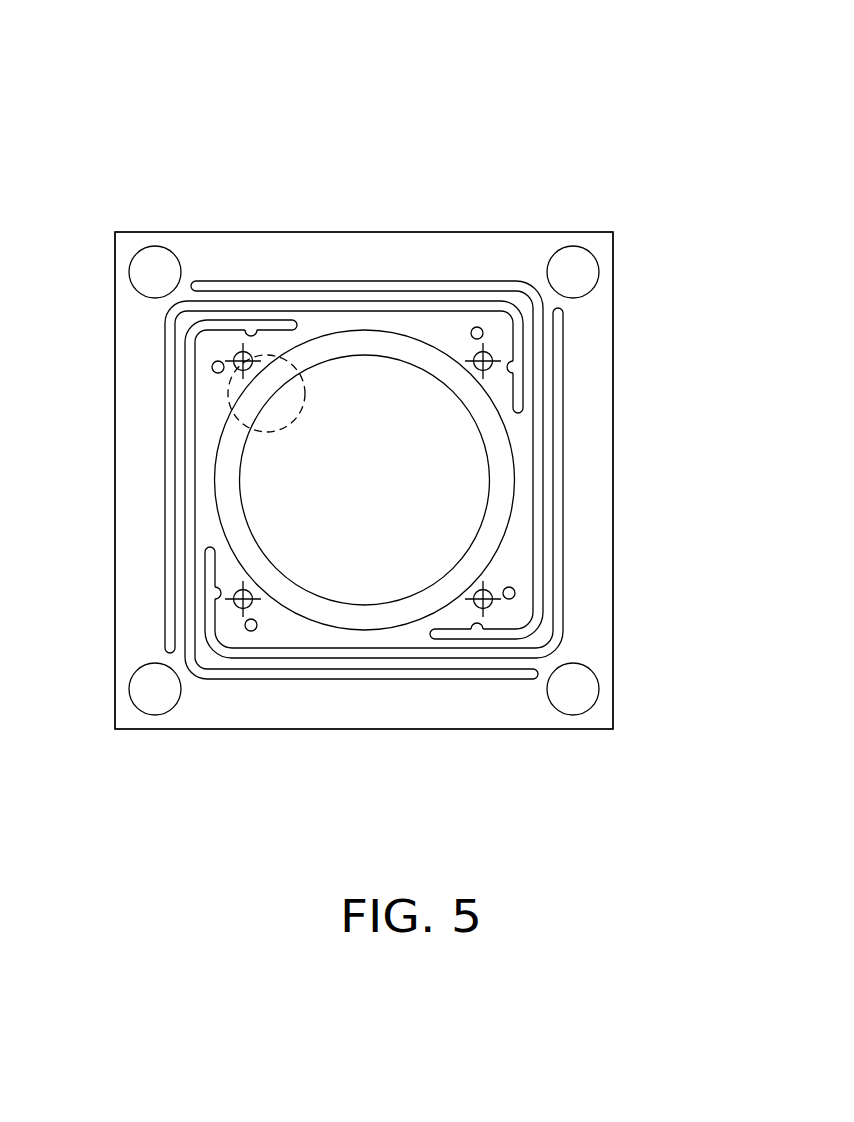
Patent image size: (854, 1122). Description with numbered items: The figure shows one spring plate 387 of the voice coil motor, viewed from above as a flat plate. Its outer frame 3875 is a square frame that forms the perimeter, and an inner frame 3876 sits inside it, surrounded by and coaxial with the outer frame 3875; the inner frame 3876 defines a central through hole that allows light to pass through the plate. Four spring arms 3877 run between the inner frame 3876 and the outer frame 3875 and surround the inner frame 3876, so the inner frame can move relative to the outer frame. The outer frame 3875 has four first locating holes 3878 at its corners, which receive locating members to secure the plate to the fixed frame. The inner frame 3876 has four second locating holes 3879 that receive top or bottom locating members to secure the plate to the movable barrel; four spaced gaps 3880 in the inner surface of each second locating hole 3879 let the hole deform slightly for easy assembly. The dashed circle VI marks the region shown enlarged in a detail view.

The spring plate 387 is at (247, 123).
The outer frame 3875 is at (582, 445).
The inner frame 3876 is at (515, 558).
The spring arms 3877 is at (548, 376).
The first locating holes 3878 is at (575, 273).
The second locating holes 3879 is at (480, 358).
The gaps 3880 is at (498, 601).
The detail view VI region VI is at (232, 403).